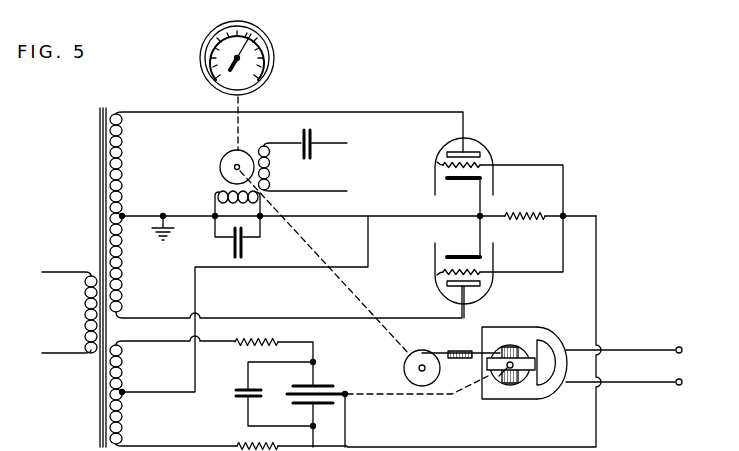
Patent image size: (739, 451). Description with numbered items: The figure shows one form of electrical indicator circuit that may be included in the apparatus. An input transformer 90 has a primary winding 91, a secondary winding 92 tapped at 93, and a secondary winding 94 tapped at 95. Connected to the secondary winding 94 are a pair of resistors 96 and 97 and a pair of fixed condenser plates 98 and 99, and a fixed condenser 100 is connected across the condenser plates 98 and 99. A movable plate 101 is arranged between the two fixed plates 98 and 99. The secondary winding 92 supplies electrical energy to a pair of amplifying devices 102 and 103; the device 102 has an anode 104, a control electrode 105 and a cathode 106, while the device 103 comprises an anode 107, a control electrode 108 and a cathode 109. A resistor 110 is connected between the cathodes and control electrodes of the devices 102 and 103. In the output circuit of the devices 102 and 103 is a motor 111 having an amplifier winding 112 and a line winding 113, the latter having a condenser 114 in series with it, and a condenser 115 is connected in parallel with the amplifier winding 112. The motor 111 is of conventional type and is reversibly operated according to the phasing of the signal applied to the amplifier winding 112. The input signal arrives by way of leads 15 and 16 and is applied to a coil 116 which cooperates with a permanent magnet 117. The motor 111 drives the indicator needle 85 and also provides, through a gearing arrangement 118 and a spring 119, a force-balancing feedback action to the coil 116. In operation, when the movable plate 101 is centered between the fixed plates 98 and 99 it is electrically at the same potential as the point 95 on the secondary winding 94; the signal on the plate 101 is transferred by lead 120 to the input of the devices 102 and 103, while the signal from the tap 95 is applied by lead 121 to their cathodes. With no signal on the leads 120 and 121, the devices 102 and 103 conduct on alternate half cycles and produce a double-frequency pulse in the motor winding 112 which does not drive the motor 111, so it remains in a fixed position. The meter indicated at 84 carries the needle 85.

The lead 15 is at (669, 349).
The lead 16 is at (669, 386).
The meter 84 is at (218, 42).
The indicator needle 85 is at (234, 51).
The input transformer 90 is at (84, 190).
The primary winding 91 is at (86, 309).
The secondary winding 92 is at (123, 164).
The tap 93 is at (124, 216).
The secondary winding 94 is at (123, 365).
The tap 95 is at (123, 393).
The resistor 96 is at (250, 346).
The resistor 97 is at (254, 441).
The fixed condenser plate 98 is at (323, 388).
The fixed condenser plate 99 is at (326, 405).
The fixed condenser 100 is at (236, 389).
The movable plate 101 is at (290, 396).
The amplifying device 102 is at (473, 138).
The amplifying device 103 is at (473, 300).
The anode 104 is at (455, 151).
The control electrode 105 is at (437, 164).
The cathode 106 is at (463, 181).
The anode 107 is at (446, 286).
The control electrode 108 is at (437, 273).
The cathode 109 is at (468, 252).
The resistor 110 is at (533, 212).
The motor 111 is at (220, 149).
The amplifier winding 112 is at (250, 198).
The line winding 113 is at (271, 157).
The condenser 114 is at (308, 129).
The condenser 115 is at (234, 250).
The coil 116 is at (514, 378).
The permanent magnet 117 is at (548, 390).
The gearing arrangement 118 is at (421, 354).
The spring 119 is at (466, 351).
The lead 120 is at (597, 290).
The lead 121 is at (283, 270).